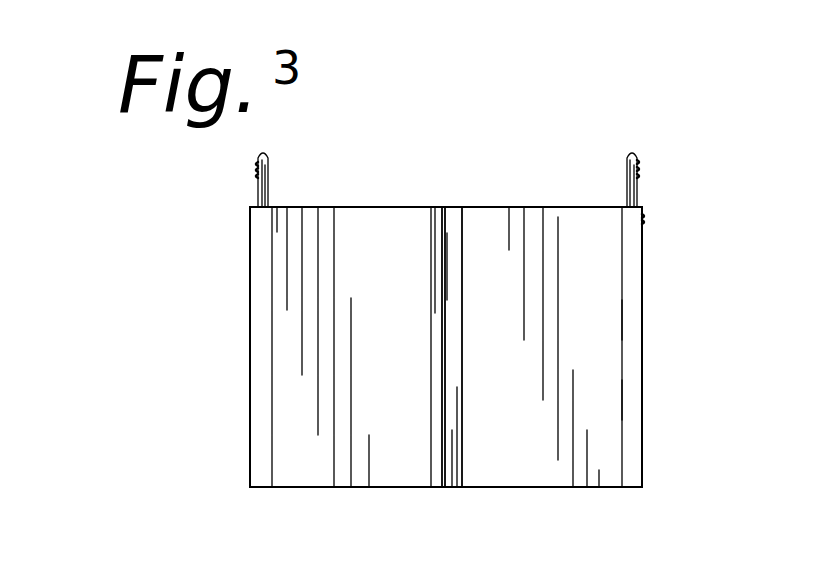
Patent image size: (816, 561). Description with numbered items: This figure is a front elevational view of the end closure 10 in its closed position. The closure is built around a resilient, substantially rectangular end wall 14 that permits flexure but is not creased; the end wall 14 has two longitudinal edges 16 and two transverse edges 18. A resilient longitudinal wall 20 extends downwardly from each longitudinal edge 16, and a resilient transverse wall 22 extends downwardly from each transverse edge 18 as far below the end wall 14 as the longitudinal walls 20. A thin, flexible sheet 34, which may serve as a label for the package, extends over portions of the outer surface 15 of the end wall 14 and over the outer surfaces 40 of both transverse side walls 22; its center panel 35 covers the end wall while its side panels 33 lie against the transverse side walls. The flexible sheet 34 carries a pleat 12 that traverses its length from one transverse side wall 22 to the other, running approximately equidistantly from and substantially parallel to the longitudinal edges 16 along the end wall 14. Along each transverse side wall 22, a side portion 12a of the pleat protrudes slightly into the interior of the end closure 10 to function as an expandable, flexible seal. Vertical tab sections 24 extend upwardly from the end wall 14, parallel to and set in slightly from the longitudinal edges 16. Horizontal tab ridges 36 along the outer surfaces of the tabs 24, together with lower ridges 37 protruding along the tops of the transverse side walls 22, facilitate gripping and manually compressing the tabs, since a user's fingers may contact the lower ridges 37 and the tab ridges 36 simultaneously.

The end closure 10 is at (146, 332).
The pleat 12 is at (453, 207).
The side portion of the pleat 12a is at (457, 378).
The end wall 14 is at (379, 207).
The outer surface of the end wall 15 is at (586, 207).
The longitudinal edges 16 is at (645, 207).
The transverse edges 18 is at (414, 207).
The longitudinal wall 20 is at (643, 273).
The transverse wall 22 is at (632, 480).
The vertical tab sections 24 is at (268, 171).
The side panels of the flexible sheet 33 is at (595, 318).
The flexible sheet 34 is at (595, 400).
The center panel of the flexible sheet 35 is at (514, 207).
The tab ridges 36 is at (257, 172).
The lower ridges 37 is at (646, 222).
The outer surfaces of the transverse side walls 40 is at (262, 463).